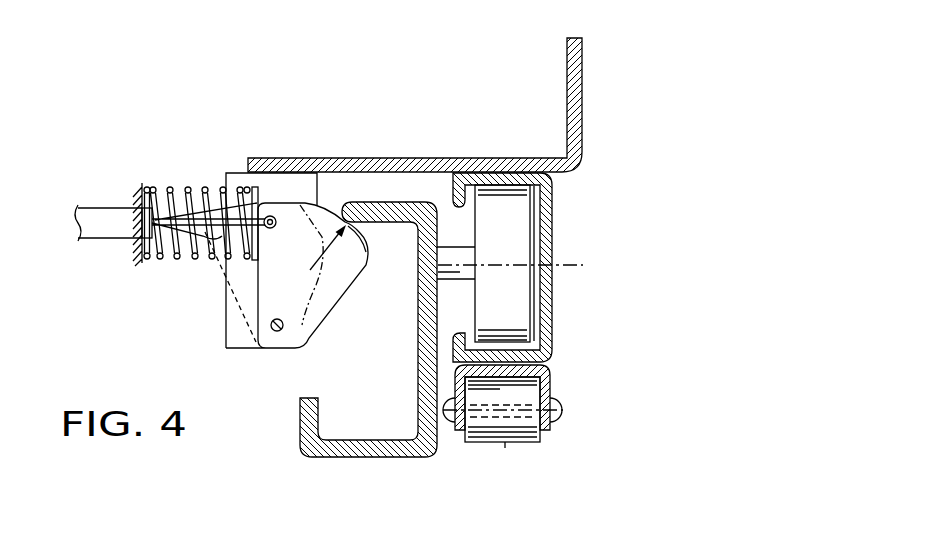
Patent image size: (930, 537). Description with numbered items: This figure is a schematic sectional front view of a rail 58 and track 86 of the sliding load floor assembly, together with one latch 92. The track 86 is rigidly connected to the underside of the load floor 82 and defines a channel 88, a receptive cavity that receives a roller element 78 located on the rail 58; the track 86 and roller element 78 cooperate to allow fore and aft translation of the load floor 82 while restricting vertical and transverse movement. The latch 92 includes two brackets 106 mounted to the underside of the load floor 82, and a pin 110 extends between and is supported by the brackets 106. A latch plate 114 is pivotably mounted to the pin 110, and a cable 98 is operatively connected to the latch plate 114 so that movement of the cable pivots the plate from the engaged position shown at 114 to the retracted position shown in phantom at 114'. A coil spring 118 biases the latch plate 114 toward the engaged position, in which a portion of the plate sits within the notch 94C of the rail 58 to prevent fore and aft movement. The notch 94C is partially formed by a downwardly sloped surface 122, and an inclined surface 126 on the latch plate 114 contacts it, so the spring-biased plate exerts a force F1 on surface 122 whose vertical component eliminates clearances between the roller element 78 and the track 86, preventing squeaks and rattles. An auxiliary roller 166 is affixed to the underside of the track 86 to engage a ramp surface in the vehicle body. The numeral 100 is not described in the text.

The rail 58 is at (418, 383).
The roller element 78 is at (530, 218).
The load floor 82 is at (438, 158).
The track 86 is at (550, 232).
The channel 88 is at (523, 328).
The latch 92 is at (164, 140).
The notch 94C is at (366, 268).
The cable 98 is at (216, 220).
The actuator rod 100 is at (107, 208).
The bracket 106 is at (303, 158).
The pin 110 is at (272, 326).
The latch plate 114 is at (318, 288).
The latch plate in retracted position 114' is at (198, 287).
The spring 118 is at (205, 187).
The inclined surface 122 is at (340, 218).
The inclined surface of latch plate 126 is at (338, 218).
The auxiliary roller 166 is at (507, 445).
The force F1 is at (312, 266).